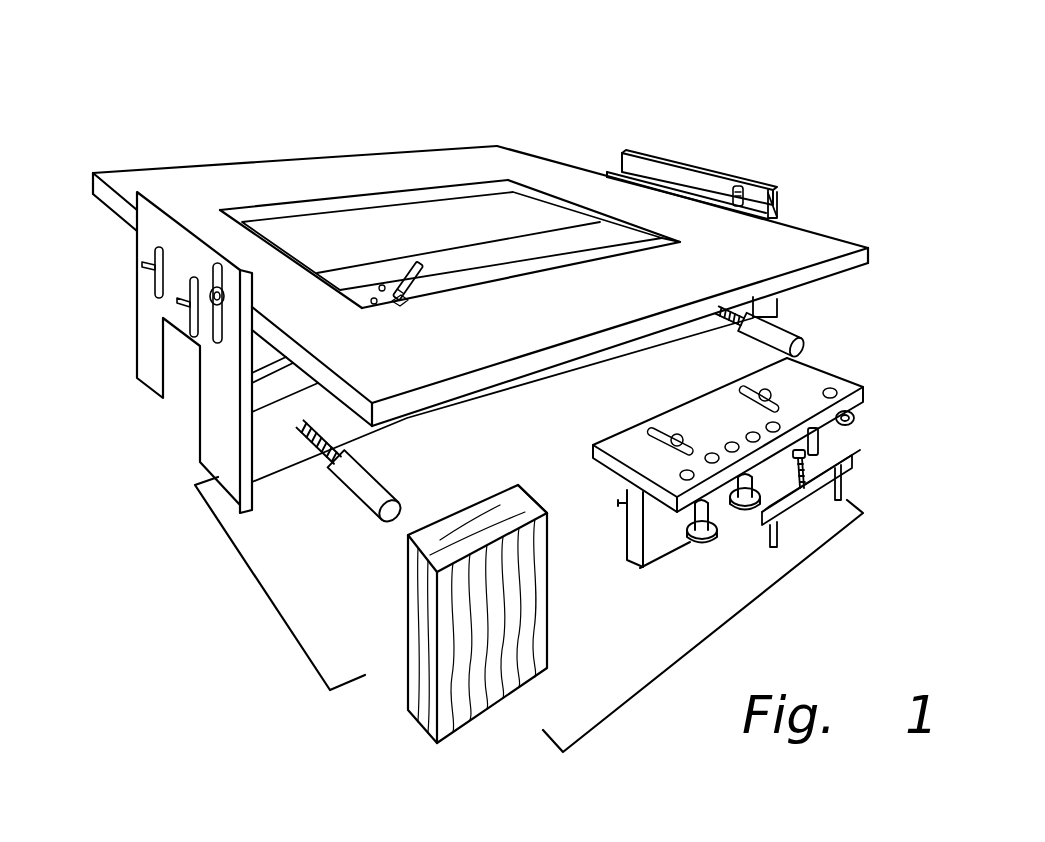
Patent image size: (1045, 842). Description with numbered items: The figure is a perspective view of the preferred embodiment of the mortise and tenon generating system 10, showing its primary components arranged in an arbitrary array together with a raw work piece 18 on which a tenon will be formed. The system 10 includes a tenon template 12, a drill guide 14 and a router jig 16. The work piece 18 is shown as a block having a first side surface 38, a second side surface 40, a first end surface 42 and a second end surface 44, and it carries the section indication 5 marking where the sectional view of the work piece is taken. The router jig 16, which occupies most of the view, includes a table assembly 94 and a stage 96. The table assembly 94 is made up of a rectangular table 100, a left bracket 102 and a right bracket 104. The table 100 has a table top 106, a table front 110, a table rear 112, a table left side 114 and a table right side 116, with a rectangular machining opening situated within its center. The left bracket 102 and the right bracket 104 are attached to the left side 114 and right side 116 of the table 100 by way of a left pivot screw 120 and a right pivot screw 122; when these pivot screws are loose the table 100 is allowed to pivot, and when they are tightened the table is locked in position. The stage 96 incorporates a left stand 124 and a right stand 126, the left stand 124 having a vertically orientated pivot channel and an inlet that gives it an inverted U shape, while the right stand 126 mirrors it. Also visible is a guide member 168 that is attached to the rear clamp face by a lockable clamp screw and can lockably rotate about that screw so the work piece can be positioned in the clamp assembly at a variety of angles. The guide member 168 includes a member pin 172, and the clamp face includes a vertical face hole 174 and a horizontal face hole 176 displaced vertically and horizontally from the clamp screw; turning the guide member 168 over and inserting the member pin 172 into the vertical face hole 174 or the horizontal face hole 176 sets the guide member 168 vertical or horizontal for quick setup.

The tenon generating system 10 is at (570, 113).
The tenon template 12 is at (857, 452).
The drill guide 14 is at (813, 377).
The router jig 16 is at (474, 122).
The work piece 18 is at (468, 668).
The first side surface 38 is at (463, 510).
The second side surface 40 is at (510, 535).
The first end surface 42 is at (413, 587).
The second end surface 44 is at (527, 490).
The section line 5- 5 is at (547, 485).
The table assembly 94 is at (233, 185).
The stage 96 is at (178, 474).
The table 100 is at (670, 283).
The left bracket 102 is at (265, 323).
The right bracket 104 is at (776, 190).
The table top 106 is at (468, 352).
The table front 110 is at (867, 247).
The table rear 112 is at (337, 162).
The table left side 114 is at (113, 198).
The table right side 116 is at (585, 178).
The left pivot screw 120 is at (205, 300).
The right pivot screw 122 is at (743, 188).
The left stand 124 is at (147, 230).
The right stand 126 is at (677, 165).
The guide member 168 is at (423, 268).
The member pin 172 is at (400, 308).
The vertical face hole 174 is at (382, 284).
The horizontal face hole 176 is at (371, 299).